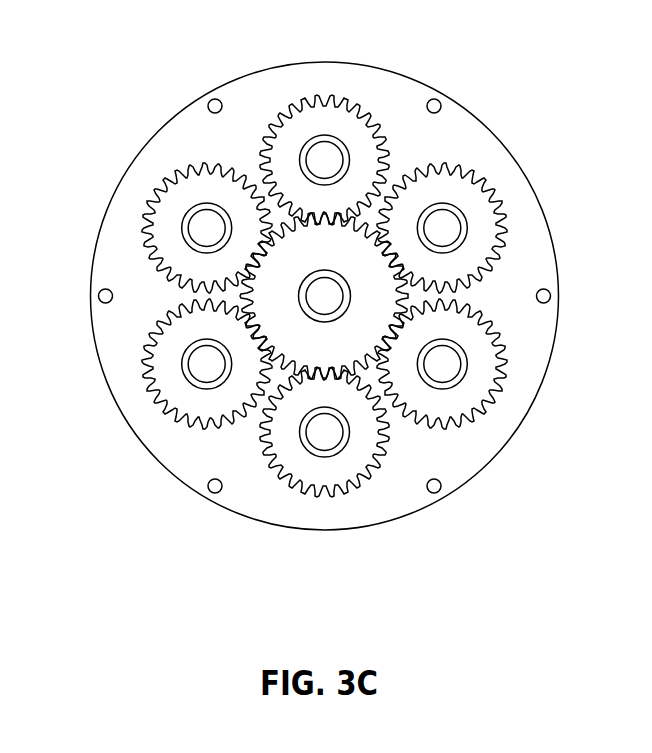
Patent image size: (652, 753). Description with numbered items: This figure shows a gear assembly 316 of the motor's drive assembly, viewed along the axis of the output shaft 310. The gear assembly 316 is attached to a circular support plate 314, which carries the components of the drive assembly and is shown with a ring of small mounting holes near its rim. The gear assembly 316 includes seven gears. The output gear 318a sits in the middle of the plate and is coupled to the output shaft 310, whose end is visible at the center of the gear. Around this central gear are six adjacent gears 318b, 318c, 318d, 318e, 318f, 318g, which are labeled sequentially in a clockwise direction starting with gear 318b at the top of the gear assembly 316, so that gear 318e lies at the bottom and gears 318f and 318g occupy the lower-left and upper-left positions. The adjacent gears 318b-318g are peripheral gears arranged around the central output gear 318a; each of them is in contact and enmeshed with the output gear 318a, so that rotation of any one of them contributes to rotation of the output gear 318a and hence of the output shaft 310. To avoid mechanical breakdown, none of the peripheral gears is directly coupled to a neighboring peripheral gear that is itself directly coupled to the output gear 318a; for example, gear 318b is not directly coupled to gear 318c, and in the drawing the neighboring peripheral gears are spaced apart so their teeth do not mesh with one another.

The output shaft 310 is at (305, 297).
The support plate 314 is at (266, 510).
The gear assembly 316 is at (440, 128).
The output gear 318a is at (280, 227).
The adjacent gear 318b is at (347, 97).
The adjacent gear 318c is at (512, 230).
The adjacent gear 318d is at (505, 348).
The adjacent gear 318e is at (373, 473).
The adjacent gear 318f is at (148, 397).
The adjacent gear 318g is at (155, 191).